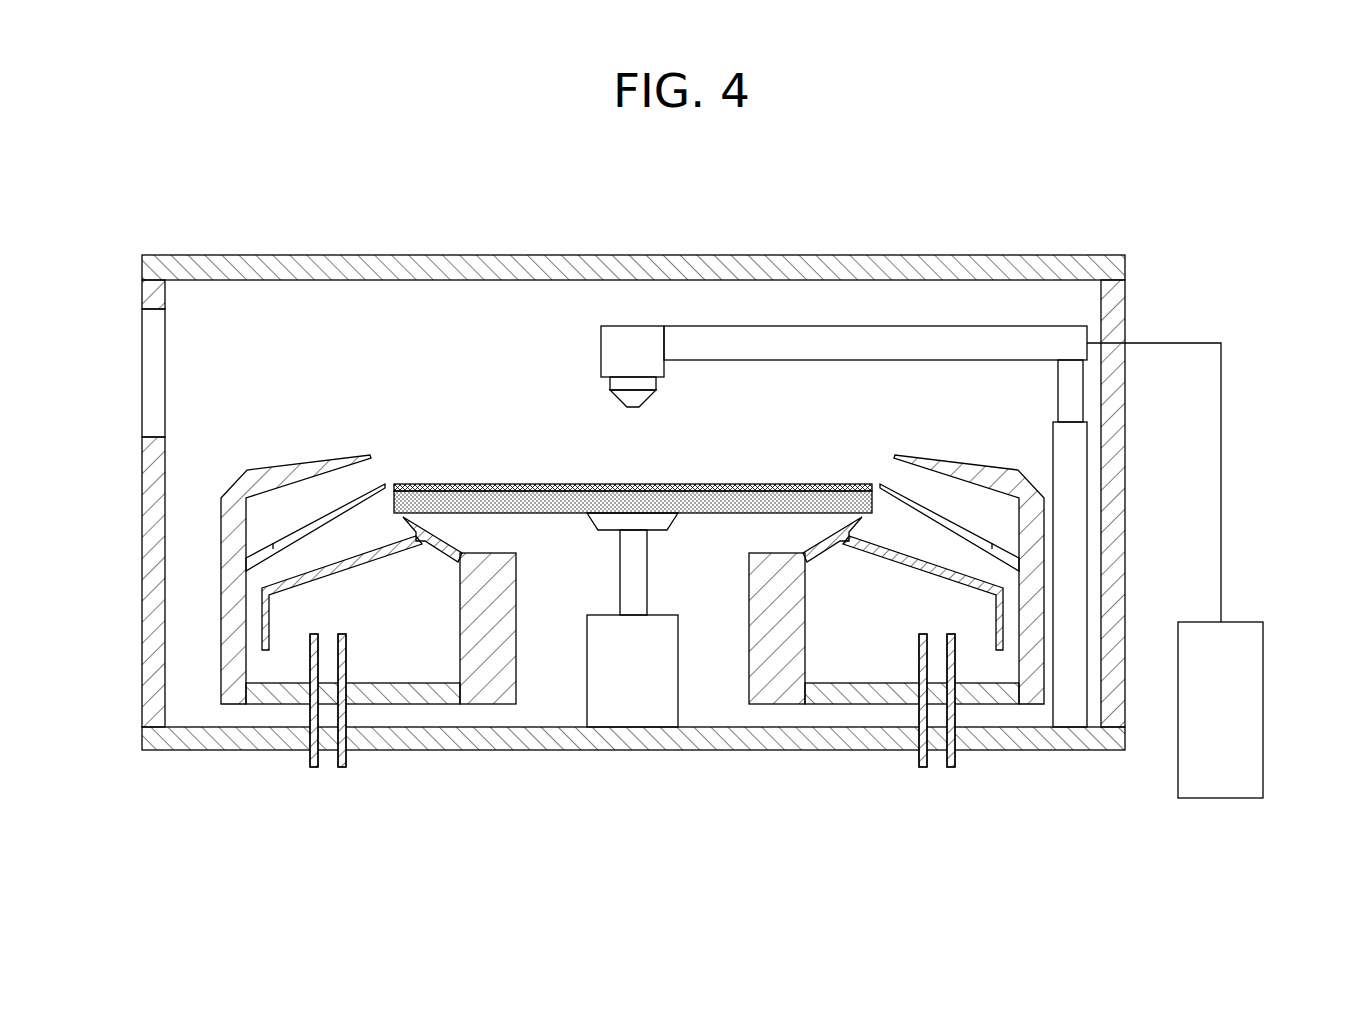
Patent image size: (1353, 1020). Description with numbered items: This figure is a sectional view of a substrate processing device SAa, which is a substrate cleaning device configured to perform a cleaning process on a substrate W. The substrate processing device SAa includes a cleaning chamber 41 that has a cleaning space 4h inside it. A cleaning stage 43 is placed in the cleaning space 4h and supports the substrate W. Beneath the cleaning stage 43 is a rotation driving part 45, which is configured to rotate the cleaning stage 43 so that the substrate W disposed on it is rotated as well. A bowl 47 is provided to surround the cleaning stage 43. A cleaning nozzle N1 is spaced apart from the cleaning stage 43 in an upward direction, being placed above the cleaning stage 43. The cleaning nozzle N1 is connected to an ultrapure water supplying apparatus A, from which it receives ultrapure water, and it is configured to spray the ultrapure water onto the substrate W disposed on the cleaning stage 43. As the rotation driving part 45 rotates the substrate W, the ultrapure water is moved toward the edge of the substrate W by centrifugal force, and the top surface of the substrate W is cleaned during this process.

The substrate processing device SAa is at (1251, 220).
The cleaning chamber 41 is at (152, 532).
The cleaning space 4h is at (193, 601).
The bowl 47 is at (287, 470).
The substrate W is at (452, 483).
The cleaning stage 43 is at (557, 513).
The rotation driving part 45 is at (662, 527).
The cleaning nozzle N1 is at (612, 387).
The ultrapure water supplying apparatus A is at (1263, 707).